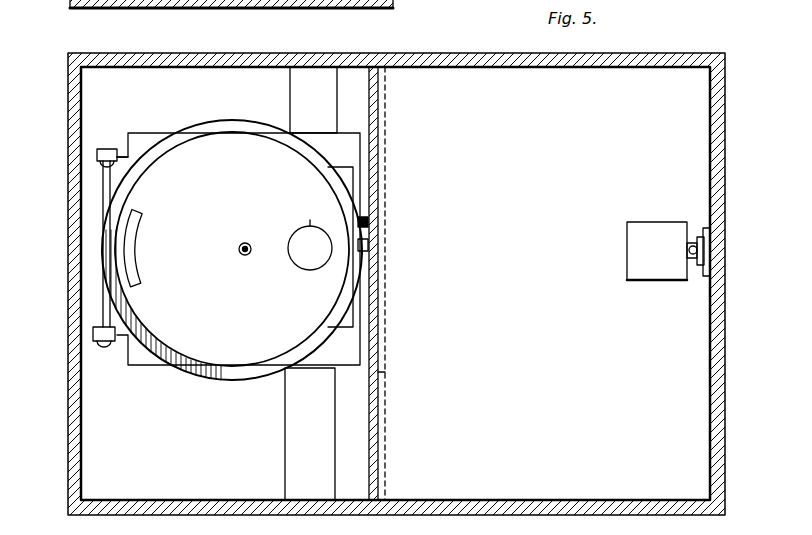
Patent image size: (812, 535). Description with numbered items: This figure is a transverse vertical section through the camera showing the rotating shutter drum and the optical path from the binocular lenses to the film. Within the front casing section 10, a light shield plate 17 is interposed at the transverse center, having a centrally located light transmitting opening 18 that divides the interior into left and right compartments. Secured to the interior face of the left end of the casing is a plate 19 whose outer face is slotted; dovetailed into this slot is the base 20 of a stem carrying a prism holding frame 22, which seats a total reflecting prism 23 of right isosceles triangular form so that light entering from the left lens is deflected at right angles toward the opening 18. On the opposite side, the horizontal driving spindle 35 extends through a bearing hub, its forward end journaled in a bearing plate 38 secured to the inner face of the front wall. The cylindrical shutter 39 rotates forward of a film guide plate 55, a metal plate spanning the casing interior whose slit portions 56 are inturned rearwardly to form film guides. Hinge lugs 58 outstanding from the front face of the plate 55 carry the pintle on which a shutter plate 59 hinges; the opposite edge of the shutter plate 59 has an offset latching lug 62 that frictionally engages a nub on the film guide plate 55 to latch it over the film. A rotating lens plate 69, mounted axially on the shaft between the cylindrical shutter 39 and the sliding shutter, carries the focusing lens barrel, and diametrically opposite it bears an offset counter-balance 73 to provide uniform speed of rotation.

The front casing section 10 is at (447, 62).
The light shield plate 17 is at (386, 376).
The light transmitting opening 18 is at (392, 273).
The plate 19 is at (712, 250).
The base 20 is at (690, 268).
The prism holding frame 22 is at (688, 278).
The total reflecting prism 23 is at (648, 232).
The horizontal driving spindle 35 is at (250, 243).
The bearing plate 38 is at (243, 254).
The cylindrical shutter 39 is at (232, 249).
The film guide plate 55 is at (238, 272).
The slit portions 56 is at (290, 100).
The hinge lugs 58 is at (100, 153).
The shutter plate 59 is at (388, 124).
The latching lug 62 is at (380, 240).
The rotating lens plate 69 is at (158, 150).
The counter-balance 73 is at (135, 230).